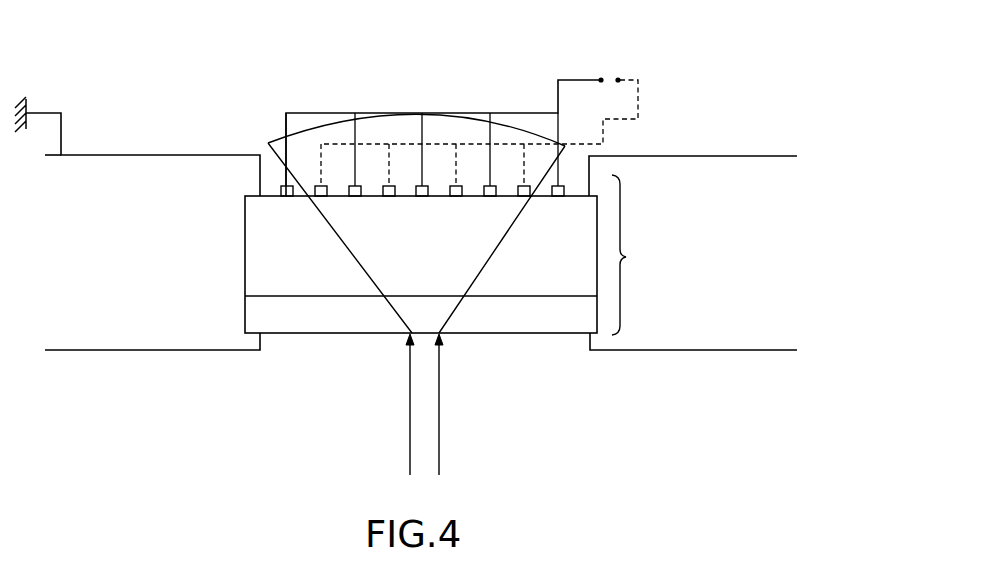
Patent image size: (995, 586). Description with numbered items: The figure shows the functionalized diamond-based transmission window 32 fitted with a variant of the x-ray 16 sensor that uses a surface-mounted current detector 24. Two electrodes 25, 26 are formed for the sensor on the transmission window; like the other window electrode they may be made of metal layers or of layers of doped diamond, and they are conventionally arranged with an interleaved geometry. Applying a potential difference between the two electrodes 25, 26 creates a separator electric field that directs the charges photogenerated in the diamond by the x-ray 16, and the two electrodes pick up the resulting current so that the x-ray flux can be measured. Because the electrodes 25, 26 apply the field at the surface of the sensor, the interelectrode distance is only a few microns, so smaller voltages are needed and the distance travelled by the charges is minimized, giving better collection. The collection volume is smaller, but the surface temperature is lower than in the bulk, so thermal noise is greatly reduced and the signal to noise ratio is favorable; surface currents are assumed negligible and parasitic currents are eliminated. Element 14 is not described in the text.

The incident light beam 14 is at (440, 400).
The x-ray 16 is at (362, 120).
The surface-mounted current detector 24 is at (214, 124).
The electrode 25 is at (312, 189).
The electrode 26 is at (278, 187).
The functionalized diamond-based transmission window 32 is at (455, 239).